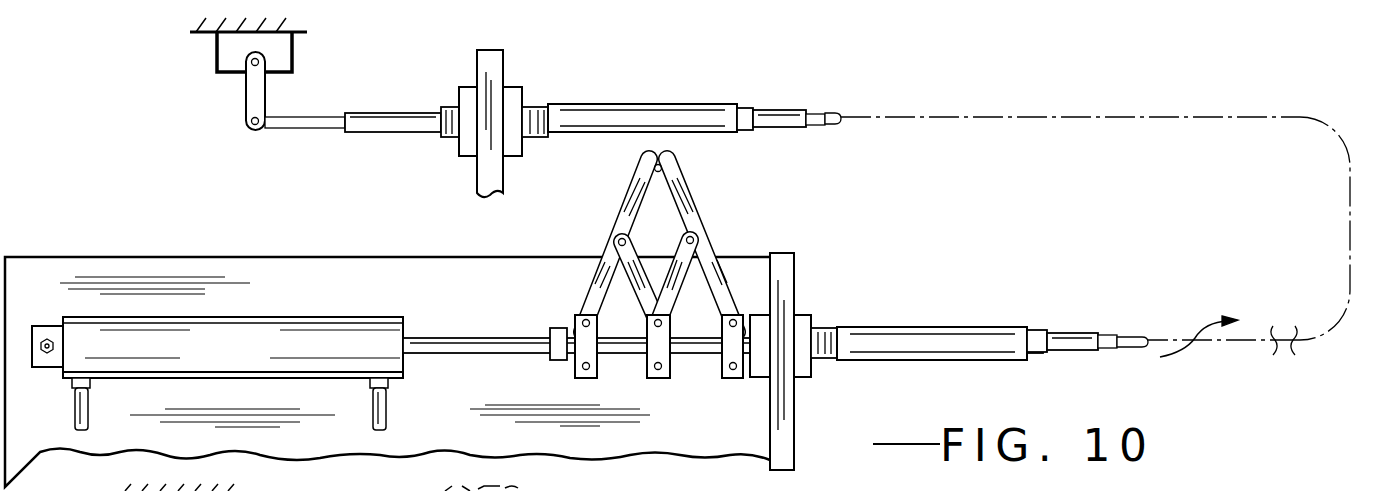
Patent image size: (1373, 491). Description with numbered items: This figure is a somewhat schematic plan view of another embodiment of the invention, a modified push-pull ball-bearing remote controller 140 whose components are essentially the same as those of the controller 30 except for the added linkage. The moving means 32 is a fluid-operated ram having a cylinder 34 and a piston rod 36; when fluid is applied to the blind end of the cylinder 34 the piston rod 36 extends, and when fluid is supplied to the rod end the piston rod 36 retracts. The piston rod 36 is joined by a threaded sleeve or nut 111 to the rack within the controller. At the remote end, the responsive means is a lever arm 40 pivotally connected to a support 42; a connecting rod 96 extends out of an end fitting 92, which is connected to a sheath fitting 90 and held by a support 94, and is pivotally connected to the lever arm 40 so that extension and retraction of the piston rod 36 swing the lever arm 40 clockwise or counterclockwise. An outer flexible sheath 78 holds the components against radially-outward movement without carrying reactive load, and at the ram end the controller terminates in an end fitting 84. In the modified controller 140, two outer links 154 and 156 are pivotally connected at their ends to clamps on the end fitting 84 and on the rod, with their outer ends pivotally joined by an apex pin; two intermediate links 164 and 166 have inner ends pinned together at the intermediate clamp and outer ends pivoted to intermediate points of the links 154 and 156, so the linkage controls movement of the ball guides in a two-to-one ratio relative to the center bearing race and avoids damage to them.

The push-pull, ball-bearing, remote controller 30 is at (605, 142).
The moving means 32 is at (285, 303).
The cylinder 34 is at (247, 360).
The piston rod 36 is at (445, 337).
The lever arm 40 is at (240, 93).
The support 42 is at (294, 56).
The outer flexible sheath 78 is at (832, 112).
The end fitting 84 is at (742, 312).
The sheath fitting 90 is at (776, 110).
The end fitting 92 is at (620, 104).
The support 94 is at (503, 72).
The connecting rod 96 is at (302, 115).
The threaded sleeve or nut 111 is at (558, 326).
The modified controller 140 is at (848, 314).
The outer link 154 is at (683, 202).
The outer link 156 is at (632, 198).
The intermediate link 164 is at (672, 262).
The intermediate link 166 is at (612, 285).